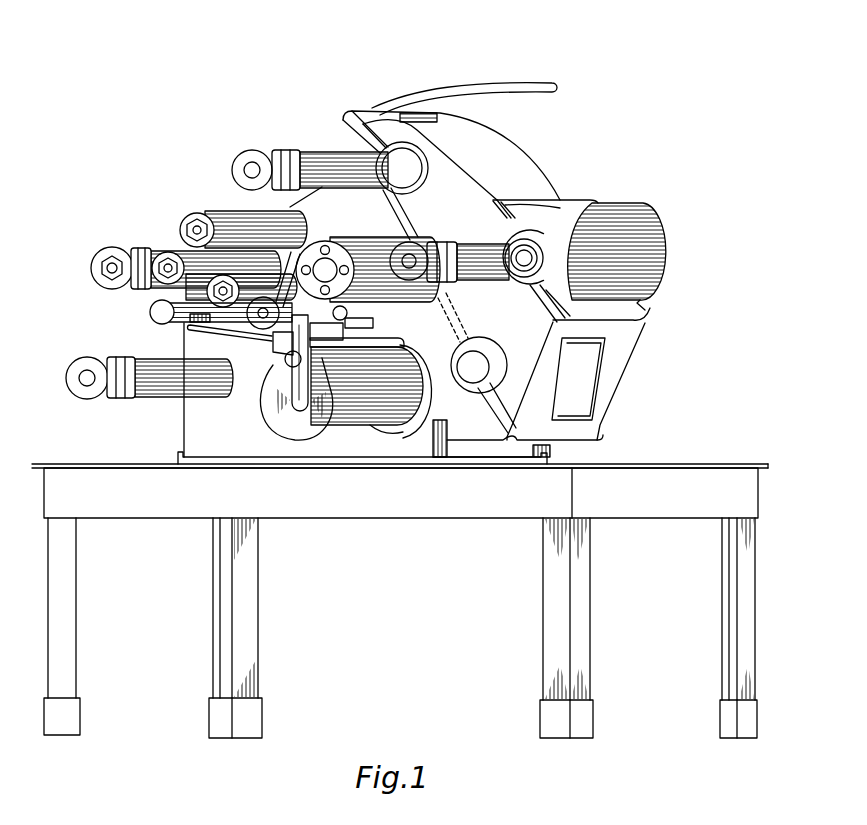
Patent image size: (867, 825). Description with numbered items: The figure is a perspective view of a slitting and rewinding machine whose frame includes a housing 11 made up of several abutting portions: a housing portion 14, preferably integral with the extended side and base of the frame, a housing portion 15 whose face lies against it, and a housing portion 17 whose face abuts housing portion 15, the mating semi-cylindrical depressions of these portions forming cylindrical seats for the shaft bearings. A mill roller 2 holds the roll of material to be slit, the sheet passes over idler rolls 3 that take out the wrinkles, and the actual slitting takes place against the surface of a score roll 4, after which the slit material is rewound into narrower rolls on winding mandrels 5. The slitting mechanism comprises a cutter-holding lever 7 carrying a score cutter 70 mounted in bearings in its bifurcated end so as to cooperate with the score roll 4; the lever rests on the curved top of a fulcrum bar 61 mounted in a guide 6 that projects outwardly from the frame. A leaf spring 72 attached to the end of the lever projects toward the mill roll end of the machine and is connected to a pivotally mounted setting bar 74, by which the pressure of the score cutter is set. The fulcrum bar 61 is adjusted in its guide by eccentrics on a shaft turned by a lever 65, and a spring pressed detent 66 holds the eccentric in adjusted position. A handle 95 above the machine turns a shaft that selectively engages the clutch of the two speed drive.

The mill roller 2 is at (157, 400).
The idler rolls 3 is at (243, 272).
The score roll 4 is at (363, 252).
The winding mandrels 5 is at (313, 165).
The fulcrum bar guide 6 is at (361, 410).
The cutter-holding lever 7 is at (275, 362).
The housing 11 is at (221, 450).
The housing portion 14 is at (300, 205).
The housing portion 15 is at (440, 186).
The housing portion 17 is at (655, 253).
The fulcrum bar 61 is at (404, 340).
The lever 65 is at (297, 440).
The spring pressed detent 66 is at (273, 372).
The score cutter 70 is at (368, 322).
The leaf spring 72 is at (272, 338).
The setting bar 74 is at (150, 313).
The handle 95 is at (494, 88).